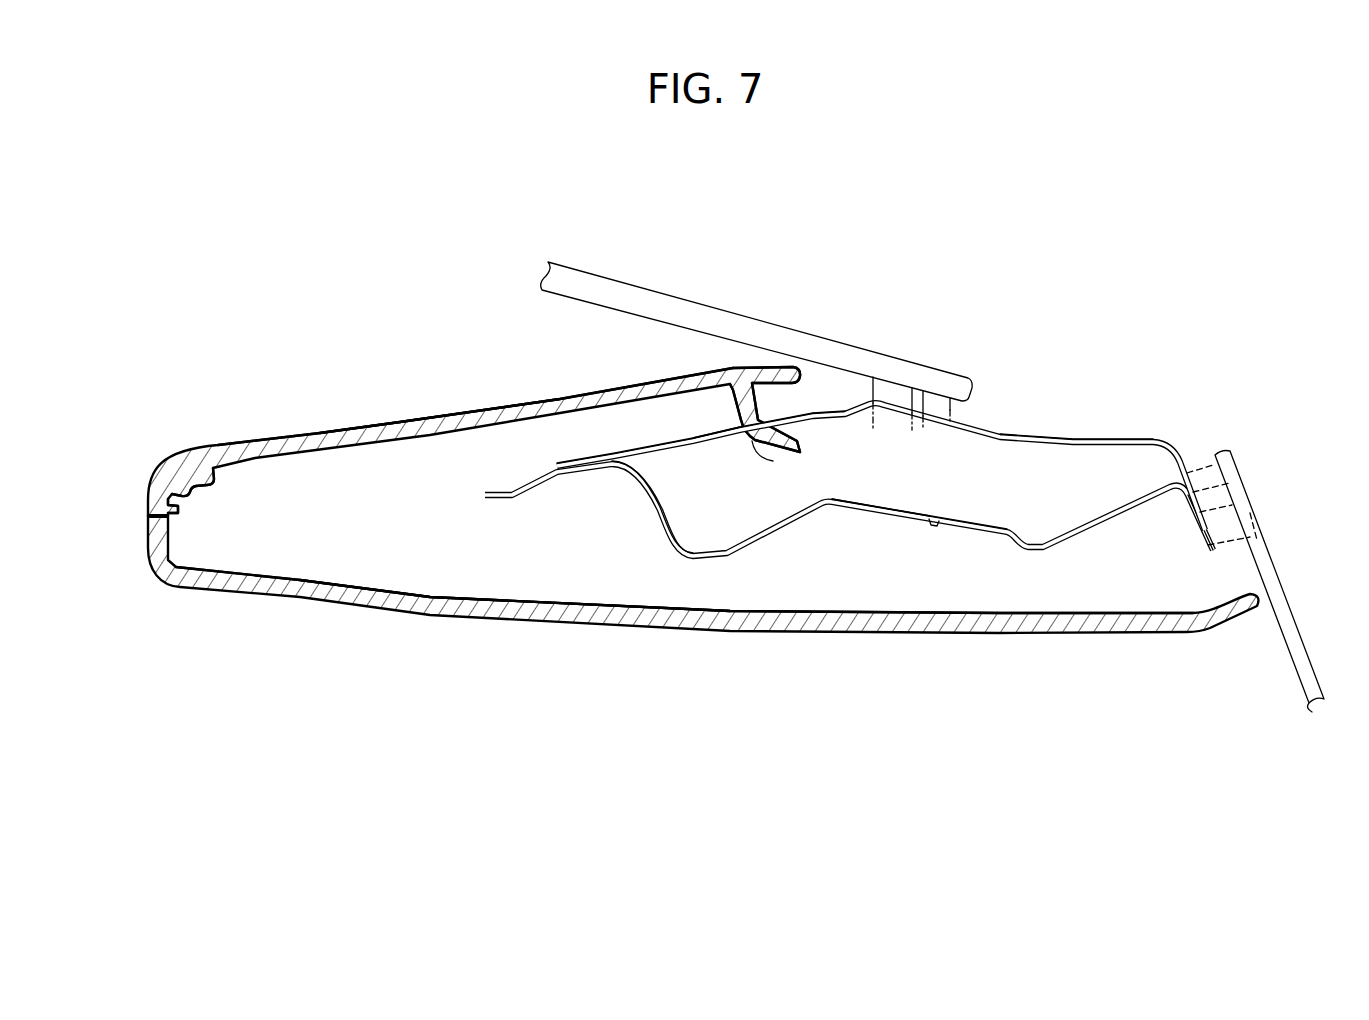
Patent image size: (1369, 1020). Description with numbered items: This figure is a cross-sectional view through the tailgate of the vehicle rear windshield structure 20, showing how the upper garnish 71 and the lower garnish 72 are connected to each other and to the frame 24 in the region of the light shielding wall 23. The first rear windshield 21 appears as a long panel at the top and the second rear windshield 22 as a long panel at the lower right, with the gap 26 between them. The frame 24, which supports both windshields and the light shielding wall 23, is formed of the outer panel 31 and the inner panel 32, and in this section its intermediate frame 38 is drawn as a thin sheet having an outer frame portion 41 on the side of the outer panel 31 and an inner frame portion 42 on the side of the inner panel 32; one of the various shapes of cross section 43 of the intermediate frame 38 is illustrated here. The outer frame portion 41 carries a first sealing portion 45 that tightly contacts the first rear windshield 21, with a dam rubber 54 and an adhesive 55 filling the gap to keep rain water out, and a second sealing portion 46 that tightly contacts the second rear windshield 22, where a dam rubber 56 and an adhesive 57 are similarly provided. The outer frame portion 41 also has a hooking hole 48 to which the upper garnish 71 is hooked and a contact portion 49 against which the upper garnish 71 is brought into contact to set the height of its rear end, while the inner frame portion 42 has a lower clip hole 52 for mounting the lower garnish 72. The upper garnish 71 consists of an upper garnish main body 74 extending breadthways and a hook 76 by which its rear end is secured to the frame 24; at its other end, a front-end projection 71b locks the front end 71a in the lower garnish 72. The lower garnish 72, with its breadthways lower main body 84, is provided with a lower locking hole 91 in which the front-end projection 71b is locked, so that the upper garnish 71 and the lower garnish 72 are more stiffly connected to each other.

The vehicle rear windshield structure 20 is at (154, 134).
The first rear windshield 21 is at (687, 300).
The second rear windshield 22 is at (1270, 583).
The light shielding wall 23 is at (418, 290).
The frame 24 is at (1052, 770).
The gap 26 is at (1042, 420).
The outer panel 31 is at (677, 472).
The inner panel 32 is at (983, 550).
The intermediate frame 38 is at (923, 708).
The outer frame portion 41 is at (693, 450).
The inner frame portion 42 is at (858, 520).
The cross section 43 is at (1053, 487).
The first sealing portion 45 is at (910, 427).
The second sealing portion 46 is at (1193, 517).
The hooking hole 48 is at (773, 461).
The contact portion 49 is at (813, 397).
The lower clip hole 52 is at (933, 525).
The dam rubber 54 is at (897, 392).
The adhesive 55 is at (940, 402).
The dam rubber 56 is at (1225, 525).
The adhesive 57 is at (1200, 473).
The upper garnish 71 is at (293, 428).
The front end 71a is at (147, 511).
The front-end projection 71b is at (178, 510).
The lower garnish 72 is at (490, 597).
The upper garnish main body 74 is at (333, 431).
The hook 76 is at (770, 365).
The lower main body 84 is at (460, 600).
The lower locking hole 91 is at (185, 498).